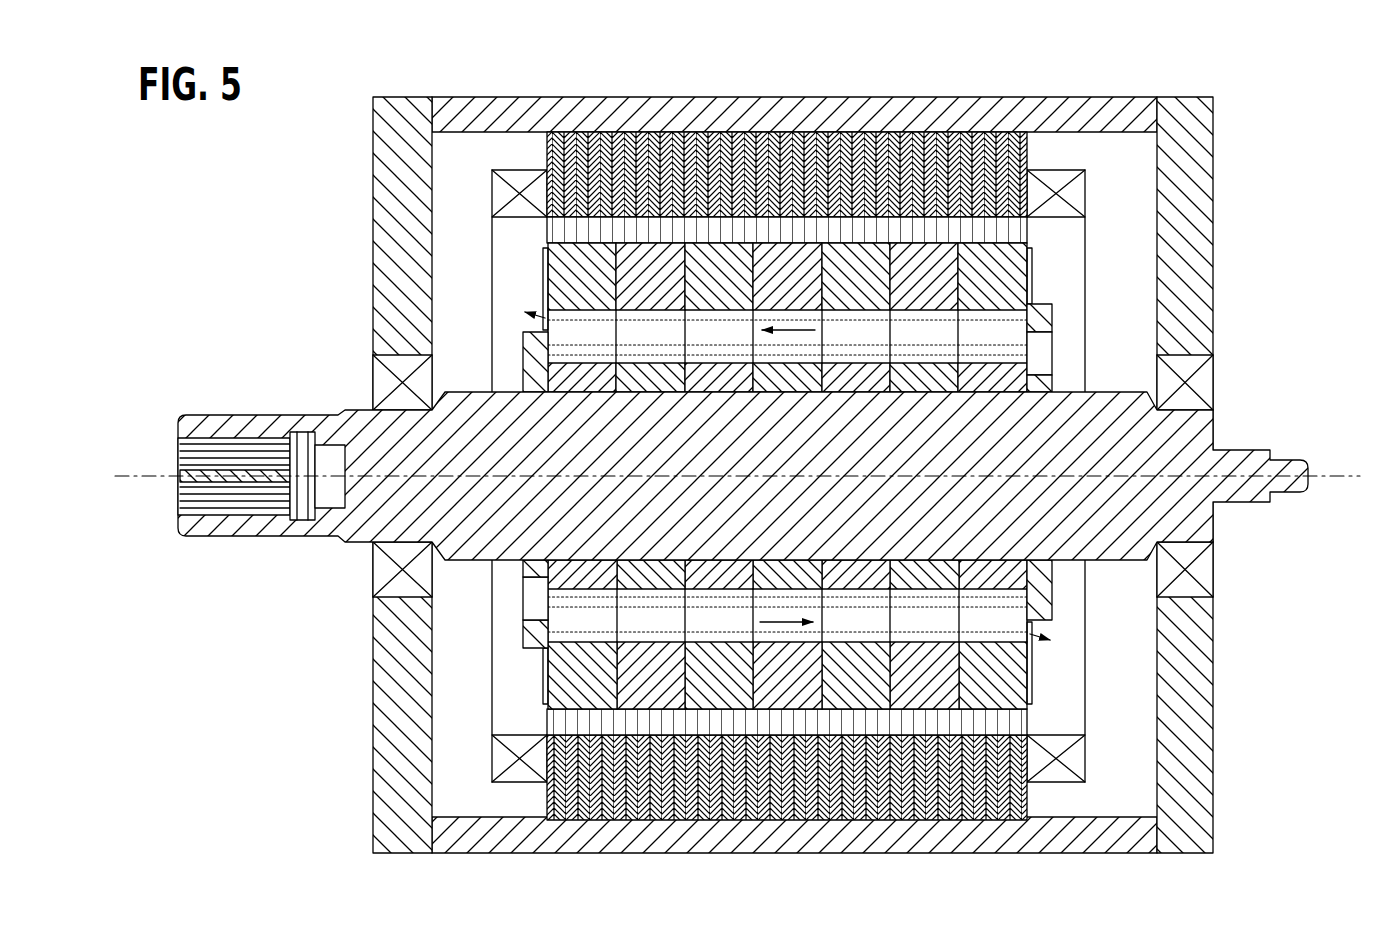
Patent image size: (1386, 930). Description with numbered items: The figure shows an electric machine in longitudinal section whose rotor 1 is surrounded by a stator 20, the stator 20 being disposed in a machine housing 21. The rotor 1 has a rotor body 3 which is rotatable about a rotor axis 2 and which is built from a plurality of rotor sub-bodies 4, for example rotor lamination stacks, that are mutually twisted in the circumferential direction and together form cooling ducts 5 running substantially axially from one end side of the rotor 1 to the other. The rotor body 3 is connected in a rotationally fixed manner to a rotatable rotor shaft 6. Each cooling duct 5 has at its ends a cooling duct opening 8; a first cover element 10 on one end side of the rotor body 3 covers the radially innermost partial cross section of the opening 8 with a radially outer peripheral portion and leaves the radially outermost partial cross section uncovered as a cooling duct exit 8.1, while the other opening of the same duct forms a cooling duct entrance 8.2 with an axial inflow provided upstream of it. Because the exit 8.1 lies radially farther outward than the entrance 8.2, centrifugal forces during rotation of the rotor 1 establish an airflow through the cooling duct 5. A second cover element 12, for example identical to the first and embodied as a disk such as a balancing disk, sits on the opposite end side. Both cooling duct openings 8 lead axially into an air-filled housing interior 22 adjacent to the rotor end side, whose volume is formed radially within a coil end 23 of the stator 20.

The rotor 1 is at (500, 266).
The rotor axis 2 is at (150, 470).
The rotor body 3 is at (903, 475).
The rotor sub-body 4 is at (720, 275).
The cooling duct 5 is at (855, 330).
The rotor shaft 6 is at (737, 492).
The cooling duct opening 8 is at (794, 501).
The cooling duct exit 8.1 is at (527, 325).
The cooling duct entrance 8.2 is at (1060, 342).
The first cover element 10 is at (530, 365).
The second cover element 12 is at (1085, 592).
The stator 20 is at (915, 165).
The machine housing 21 is at (522, 115).
The housing interior 22 is at (1115, 210).
The coil end 23 is at (500, 192).